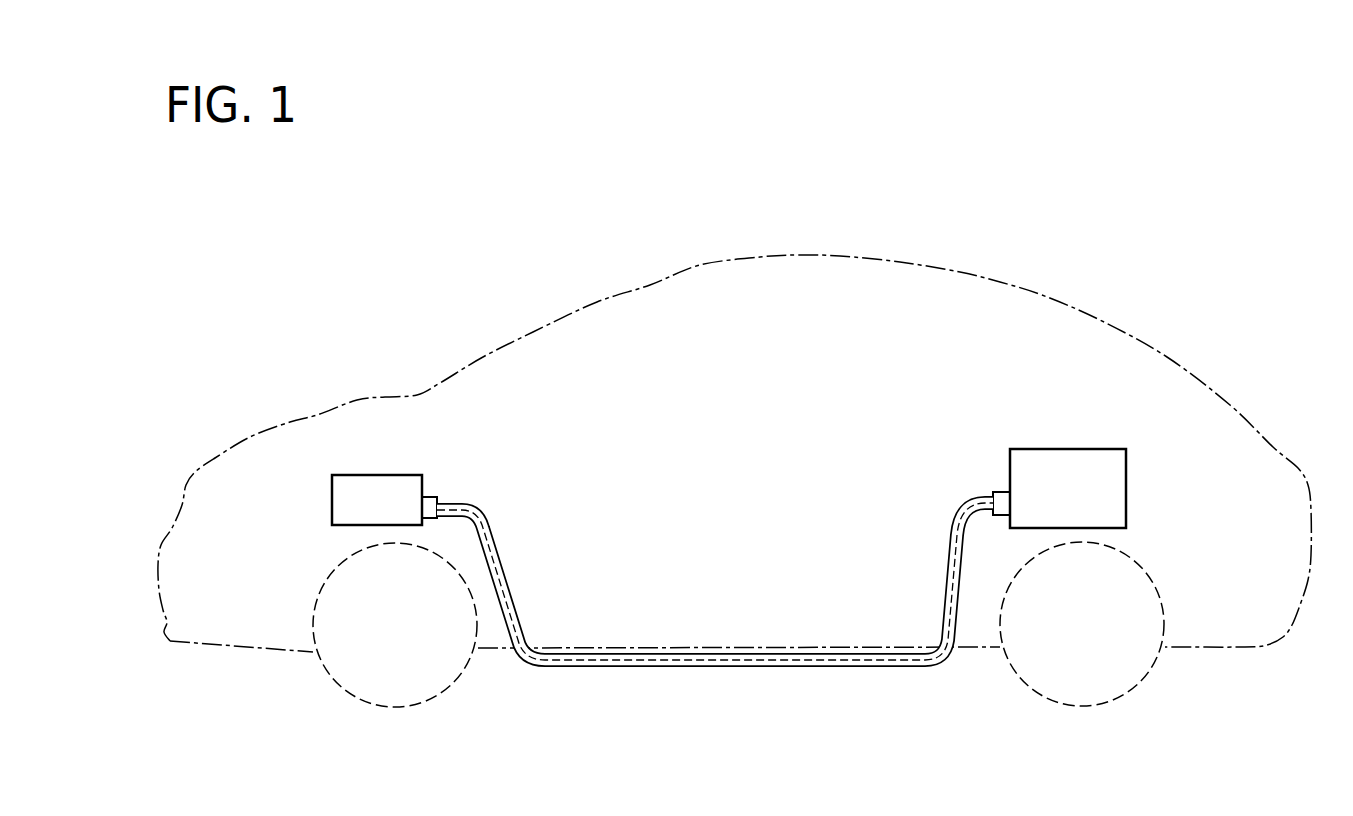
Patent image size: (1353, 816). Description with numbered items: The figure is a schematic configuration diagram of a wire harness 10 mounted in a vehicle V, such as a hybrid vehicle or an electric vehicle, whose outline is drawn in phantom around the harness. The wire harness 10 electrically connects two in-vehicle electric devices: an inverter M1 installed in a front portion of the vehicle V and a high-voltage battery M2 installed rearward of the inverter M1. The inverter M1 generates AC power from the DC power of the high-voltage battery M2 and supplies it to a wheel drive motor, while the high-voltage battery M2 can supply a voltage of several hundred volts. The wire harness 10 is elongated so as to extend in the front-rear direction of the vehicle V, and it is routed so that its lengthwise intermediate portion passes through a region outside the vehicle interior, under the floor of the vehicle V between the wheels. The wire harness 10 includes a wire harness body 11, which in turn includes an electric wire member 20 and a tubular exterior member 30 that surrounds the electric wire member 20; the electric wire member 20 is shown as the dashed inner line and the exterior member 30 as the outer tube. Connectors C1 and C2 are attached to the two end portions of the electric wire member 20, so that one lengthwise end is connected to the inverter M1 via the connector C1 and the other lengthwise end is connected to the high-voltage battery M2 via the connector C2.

The vehicle V is at (1040, 295).
The wire harness 10 is at (719, 516).
The wire harness body 11 is at (715, 581).
The electric wire member 20 is at (955, 550).
The exterior member 30 is at (955, 585).
The inverter M1 is at (382, 475).
The connector C1 is at (428, 495).
The high-voltage battery M2 is at (1098, 449).
The connector C2 is at (1002, 490).